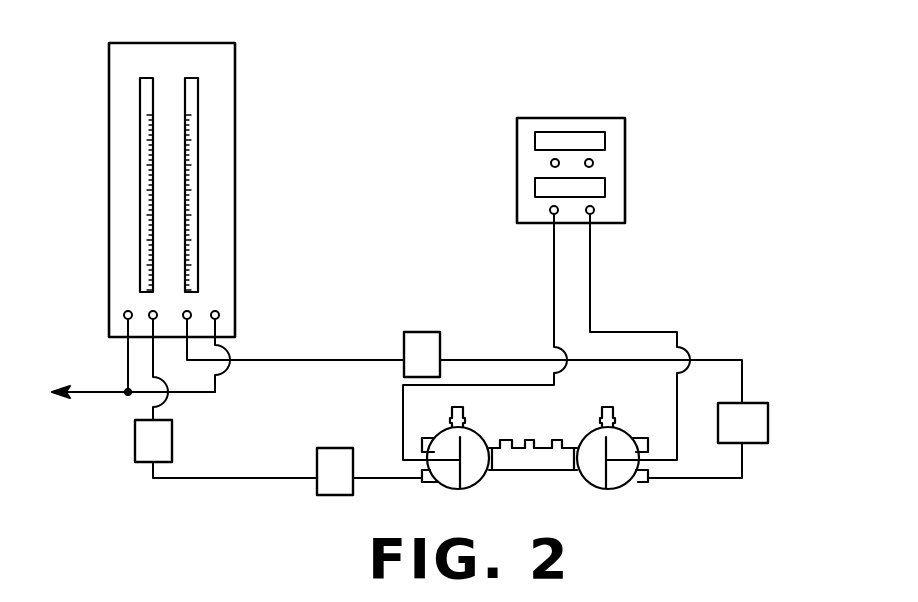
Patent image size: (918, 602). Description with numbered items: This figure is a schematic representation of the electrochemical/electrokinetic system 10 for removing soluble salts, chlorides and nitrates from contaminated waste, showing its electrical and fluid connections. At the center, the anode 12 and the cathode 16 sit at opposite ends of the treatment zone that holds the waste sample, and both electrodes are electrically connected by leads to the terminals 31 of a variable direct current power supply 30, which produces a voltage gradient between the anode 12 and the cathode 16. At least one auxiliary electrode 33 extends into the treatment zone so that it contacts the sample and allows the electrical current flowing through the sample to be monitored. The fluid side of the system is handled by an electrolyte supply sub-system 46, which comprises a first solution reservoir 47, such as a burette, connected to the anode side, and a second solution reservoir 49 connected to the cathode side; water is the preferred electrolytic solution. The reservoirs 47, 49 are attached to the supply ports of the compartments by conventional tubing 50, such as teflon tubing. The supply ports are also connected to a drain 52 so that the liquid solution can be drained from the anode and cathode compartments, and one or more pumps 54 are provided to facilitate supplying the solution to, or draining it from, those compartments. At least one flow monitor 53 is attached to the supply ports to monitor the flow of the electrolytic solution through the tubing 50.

The system 10 is at (546, 473).
The anode 12 is at (456, 490).
The cathode 16 is at (616, 490).
The variable direct current power supply 30 is at (585, 117).
The terminals 31 is at (550, 210).
The auxiliary electrode 33 is at (505, 440).
The electrolyte supply sub-system 46 is at (246, 52).
The first solution reservoir 47 is at (143, 127).
The second solution reservoir 49 is at (191, 118).
The tubing 50 is at (307, 360).
The drain 52 is at (74, 393).
The flow monitor 53 is at (428, 349).
The pumps 54 is at (331, 483).